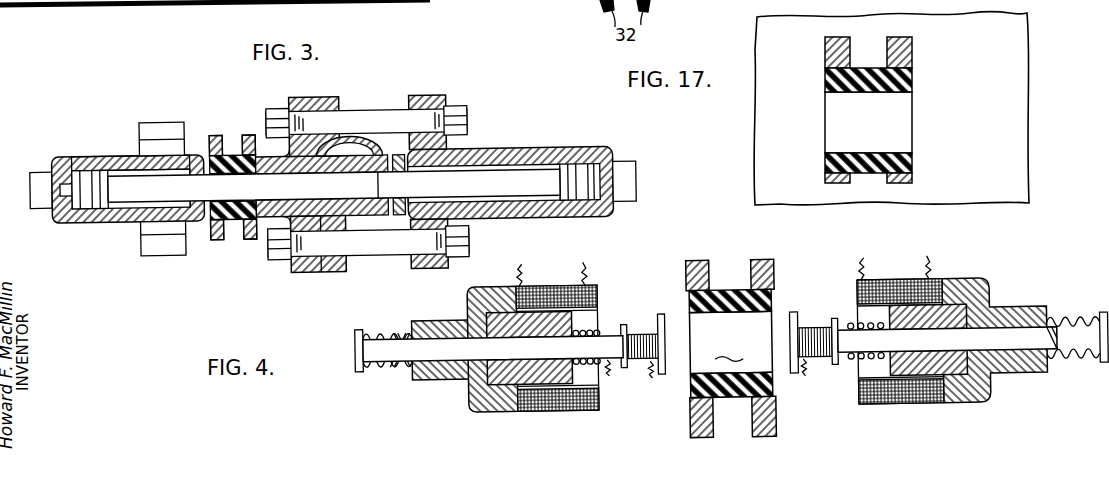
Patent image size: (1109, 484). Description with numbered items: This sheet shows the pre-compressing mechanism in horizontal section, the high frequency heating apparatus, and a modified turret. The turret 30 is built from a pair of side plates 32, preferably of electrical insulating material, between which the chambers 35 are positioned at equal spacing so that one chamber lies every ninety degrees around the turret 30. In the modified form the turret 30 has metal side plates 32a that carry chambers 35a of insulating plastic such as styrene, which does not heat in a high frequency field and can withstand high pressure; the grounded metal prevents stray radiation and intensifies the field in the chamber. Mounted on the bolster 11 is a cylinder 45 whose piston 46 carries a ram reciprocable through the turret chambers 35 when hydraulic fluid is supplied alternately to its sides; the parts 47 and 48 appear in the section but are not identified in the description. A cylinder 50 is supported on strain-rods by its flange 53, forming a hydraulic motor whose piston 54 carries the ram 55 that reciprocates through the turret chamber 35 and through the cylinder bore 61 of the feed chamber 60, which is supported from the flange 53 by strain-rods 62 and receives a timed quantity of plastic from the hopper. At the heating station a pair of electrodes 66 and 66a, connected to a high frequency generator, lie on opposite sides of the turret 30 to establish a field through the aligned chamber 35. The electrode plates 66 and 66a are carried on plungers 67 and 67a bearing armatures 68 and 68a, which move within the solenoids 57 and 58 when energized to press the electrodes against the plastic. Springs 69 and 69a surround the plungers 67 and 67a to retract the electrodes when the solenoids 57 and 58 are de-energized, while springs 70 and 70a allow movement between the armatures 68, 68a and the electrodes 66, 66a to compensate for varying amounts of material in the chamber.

In FIG. 3, the bolster 11 is at (177, 254).
In FIG. 3, the turret 30 is at (210, 143).
In FIG. 4, the turret 30 is at (690, 411).
In FIG. 17, the turret 30 is at (910, 65).
In FIG. 3, the side plates 32 is at (251, 238).
In FIG. 4, the side plates 32 is at (706, 262).
In FIG. 3, the chambers 35 is at (235, 181).
In FIG. 4, the chambers 35 is at (728, 289).
In FIG. 3, the cylinder 45 is at (92, 156).
In FIG. 3, the piston 46 is at (92, 204).
In FIG. 3, the shaft 47 is at (132, 194).
In FIG. 3, the housing wall 48 is at (127, 157).
In FIG. 3, the cylinder 50 is at (578, 152).
In FIG. 3, the flange 53 is at (443, 101).
In FIG. 3, the piston 54 is at (608, 153).
In FIG. 3, the ram 55 is at (496, 170).
In FIG. 4, the solenoid 57 is at (542, 284).
In FIG. 4, the solenoid 58 is at (914, 266).
In FIG. 3, the feed chamber 60 is at (342, 147).
In FIG. 3, the cylinder bore 61 is at (322, 262).
In FIG. 3, the strain-rods 62 is at (384, 121).
In FIG. 4, the electrode 66 is at (661, 314).
In FIG. 4, the plunger 67 is at (603, 338).
In FIG. 4, the armature 68 is at (491, 308).
In FIG. 4, the spring 69 is at (395, 328).
In FIG. 4, the spring 70 is at (608, 368).
In FIG. 4, the electrode 66a is at (795, 312).
In FIG. 4, the plunger 67a is at (851, 337).
In FIG. 4, the armature 68a is at (962, 308).
In FIG. 4, the spring 69a is at (1073, 325).
In FIG. 4, the spring 70a is at (851, 368).
In FIG. 17, the chambers 35a is at (896, 153).
In FIG. 17, the metal side plates 32a is at (900, 183).